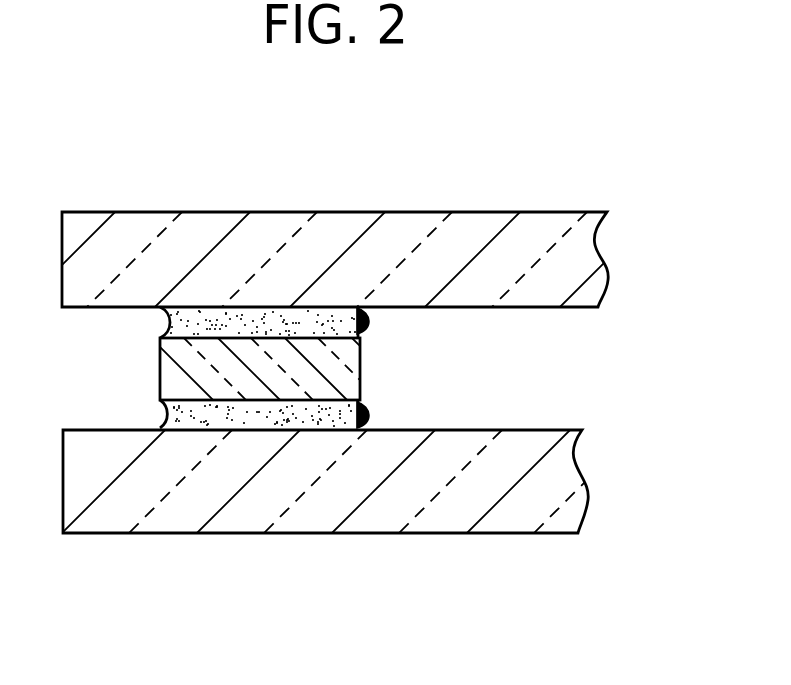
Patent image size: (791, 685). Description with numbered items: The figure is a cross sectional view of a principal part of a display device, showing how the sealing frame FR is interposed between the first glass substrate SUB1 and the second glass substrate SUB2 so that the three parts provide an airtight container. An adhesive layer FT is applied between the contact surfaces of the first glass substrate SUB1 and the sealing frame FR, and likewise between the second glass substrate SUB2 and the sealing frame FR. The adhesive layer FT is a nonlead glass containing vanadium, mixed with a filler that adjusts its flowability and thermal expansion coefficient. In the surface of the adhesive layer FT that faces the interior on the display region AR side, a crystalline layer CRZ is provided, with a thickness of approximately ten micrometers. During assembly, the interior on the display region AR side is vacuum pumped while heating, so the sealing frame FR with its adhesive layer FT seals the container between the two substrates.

The first glass substrate SUB1 is at (573, 513).
The second glass substrate SUB2 is at (593, 288).
The sealing frame FR is at (170, 387).
The adhesive layer FT is at (297, 322).
The crystalline layer CRZ is at (367, 327).
The display region AR is at (416, 162).